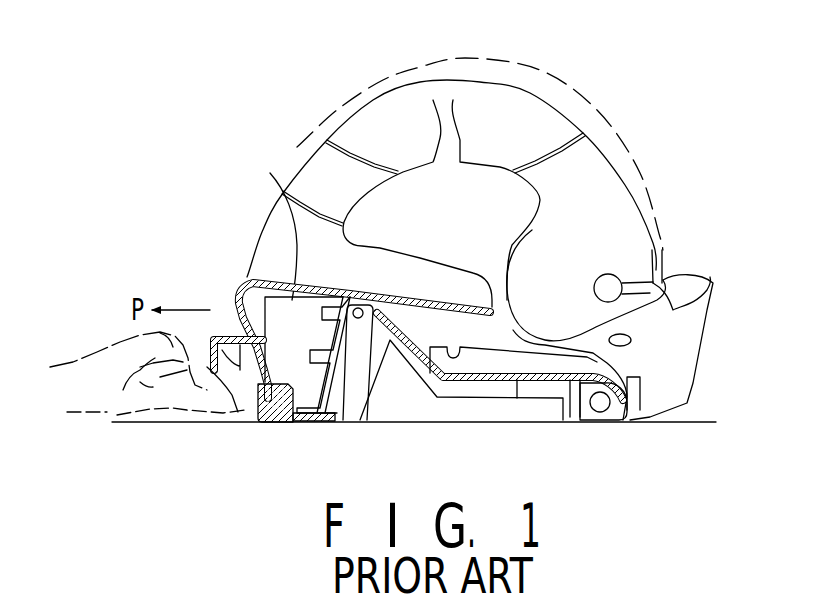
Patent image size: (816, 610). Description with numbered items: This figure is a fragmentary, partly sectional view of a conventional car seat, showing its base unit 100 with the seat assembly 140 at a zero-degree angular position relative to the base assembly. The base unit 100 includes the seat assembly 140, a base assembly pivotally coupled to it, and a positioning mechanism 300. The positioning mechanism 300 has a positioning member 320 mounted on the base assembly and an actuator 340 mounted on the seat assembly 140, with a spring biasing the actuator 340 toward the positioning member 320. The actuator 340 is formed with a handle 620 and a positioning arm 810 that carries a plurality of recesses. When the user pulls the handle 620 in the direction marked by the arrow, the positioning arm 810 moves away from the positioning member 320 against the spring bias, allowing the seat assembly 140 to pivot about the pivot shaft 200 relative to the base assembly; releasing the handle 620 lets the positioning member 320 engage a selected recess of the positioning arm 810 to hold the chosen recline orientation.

The base unit 100 is at (604, 108).
The positioning arm 810 is at (250, 268).
The positioning mechanism 300 is at (261, 274).
The seat assembly 140 is at (234, 265).
The actuator 340 is at (237, 311).
The positioning member 320 is at (362, 300).
The handle 620 is at (205, 365).
The pivot shaft 200 is at (600, 413).